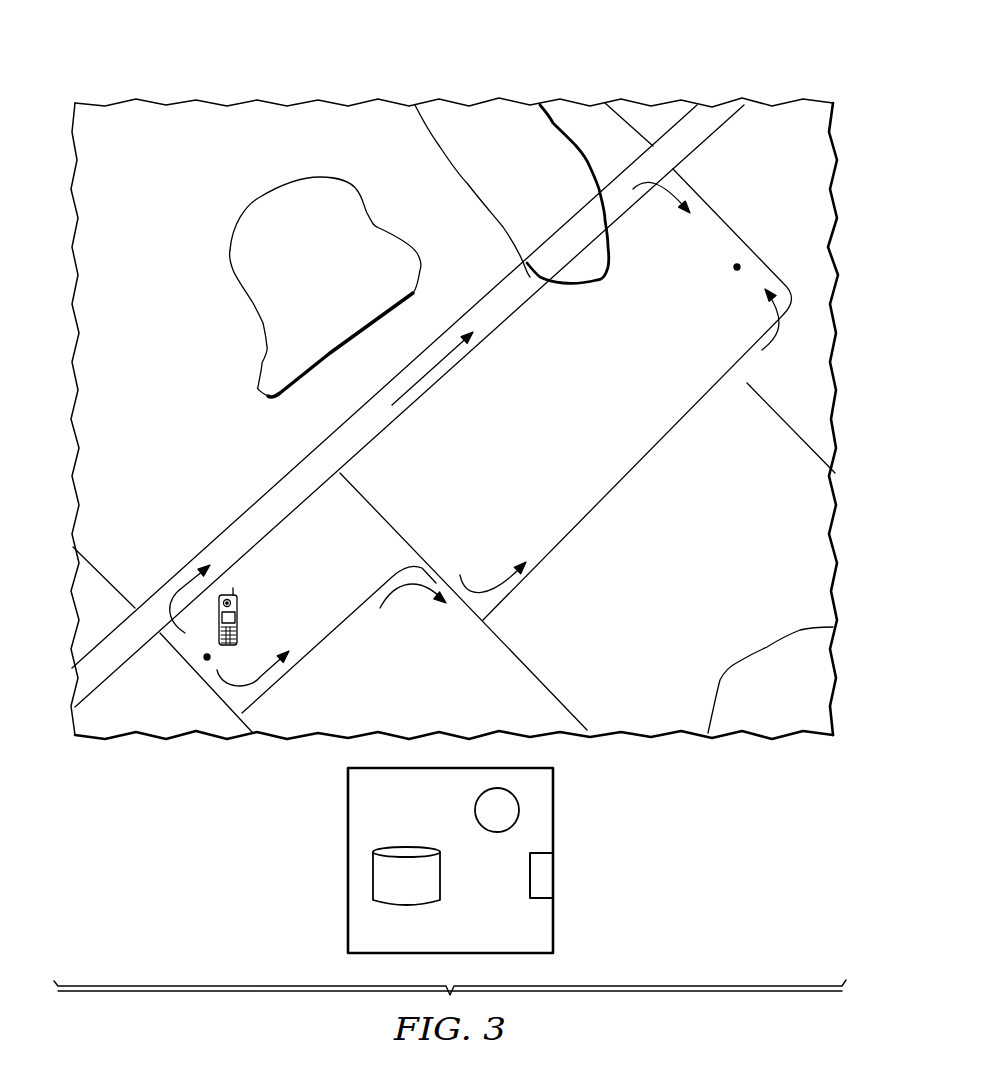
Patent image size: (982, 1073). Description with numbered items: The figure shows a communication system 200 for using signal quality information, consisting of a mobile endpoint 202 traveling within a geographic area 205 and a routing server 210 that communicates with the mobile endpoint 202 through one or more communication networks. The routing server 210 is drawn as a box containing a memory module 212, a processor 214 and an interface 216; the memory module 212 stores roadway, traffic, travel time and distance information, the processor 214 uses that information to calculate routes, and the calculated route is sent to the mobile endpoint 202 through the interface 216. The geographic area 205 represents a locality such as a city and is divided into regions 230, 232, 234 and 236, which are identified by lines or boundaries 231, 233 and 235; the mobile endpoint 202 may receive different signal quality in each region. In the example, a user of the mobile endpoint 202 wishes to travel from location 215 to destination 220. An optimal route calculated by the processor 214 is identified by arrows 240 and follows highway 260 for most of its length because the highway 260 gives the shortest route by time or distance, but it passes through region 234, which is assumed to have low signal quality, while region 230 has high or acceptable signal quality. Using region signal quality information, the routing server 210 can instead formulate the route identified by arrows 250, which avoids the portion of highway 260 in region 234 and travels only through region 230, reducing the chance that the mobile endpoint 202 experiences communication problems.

The communication system 200 is at (331, 77).
The mobile endpoint 202 is at (240, 602).
The geographic area 205 is at (645, 99).
The routing server 210 is at (410, 860).
The memory module 212 is at (426, 893).
The processor 214 is at (474, 807).
The interface 216 is at (528, 880).
The location 215 is at (202, 660).
The destination 220 is at (734, 271).
The region 230 is at (161, 168).
The boundary 231 is at (253, 302).
The region 232 is at (339, 276).
The boundary 233 is at (612, 252).
The region 234 is at (552, 189).
The boundary 235 is at (760, 655).
The region 236 is at (806, 709).
The arrows 240 is at (683, 187).
The arrows 250 is at (762, 350).
The highway 260 is at (380, 434).